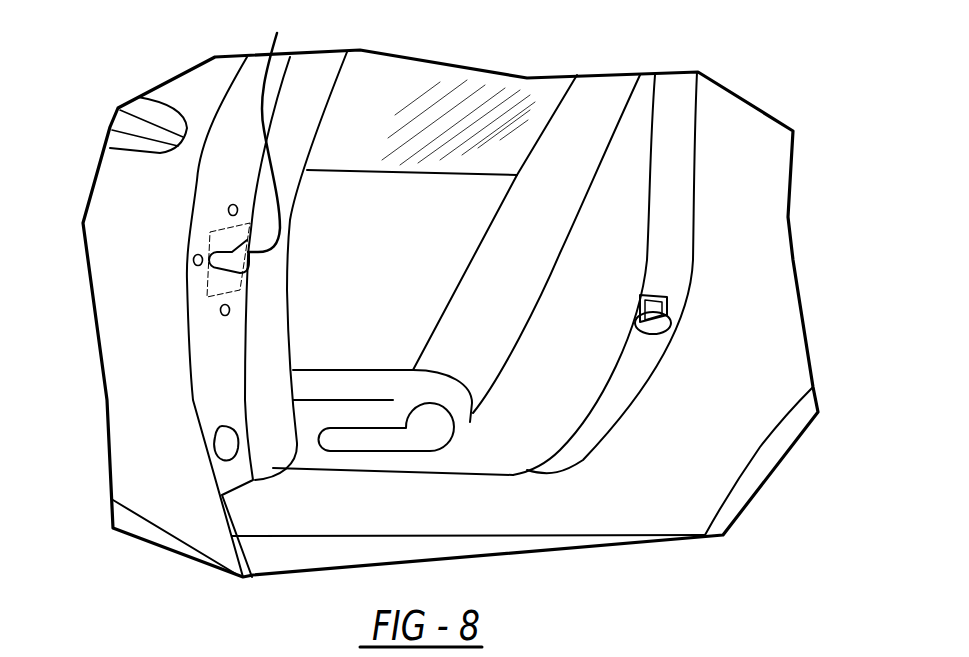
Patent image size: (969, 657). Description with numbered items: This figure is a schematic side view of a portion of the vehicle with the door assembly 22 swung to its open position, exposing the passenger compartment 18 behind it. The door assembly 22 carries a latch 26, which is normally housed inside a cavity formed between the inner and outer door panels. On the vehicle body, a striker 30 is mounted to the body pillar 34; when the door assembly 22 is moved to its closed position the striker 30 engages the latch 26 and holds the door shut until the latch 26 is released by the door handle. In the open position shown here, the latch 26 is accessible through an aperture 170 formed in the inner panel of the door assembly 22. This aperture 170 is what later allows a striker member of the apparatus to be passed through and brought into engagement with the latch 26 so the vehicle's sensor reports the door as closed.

The passenger compartment 18 is at (373, 146).
The door assembly 22 is at (160, 342).
The latch 26 is at (218, 227).
The striker 30 is at (664, 297).
The body pillar 34 is at (687, 207).
The aperture 170 is at (275, 128).